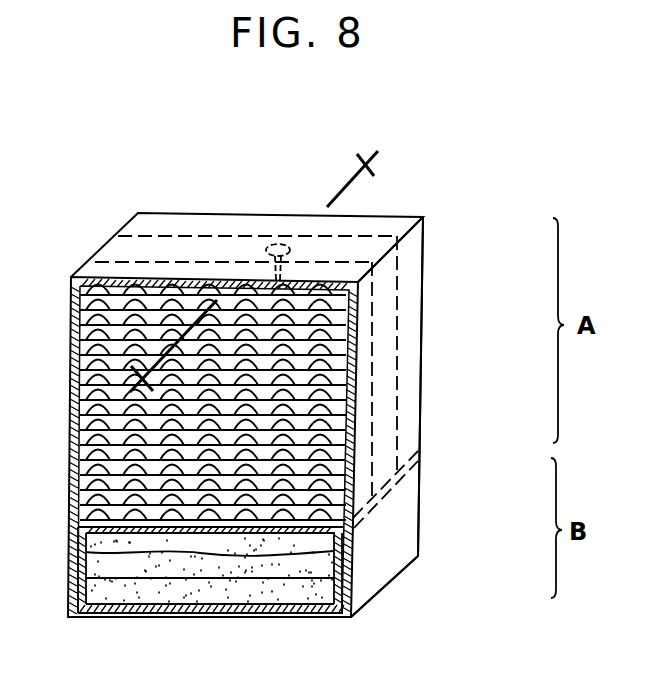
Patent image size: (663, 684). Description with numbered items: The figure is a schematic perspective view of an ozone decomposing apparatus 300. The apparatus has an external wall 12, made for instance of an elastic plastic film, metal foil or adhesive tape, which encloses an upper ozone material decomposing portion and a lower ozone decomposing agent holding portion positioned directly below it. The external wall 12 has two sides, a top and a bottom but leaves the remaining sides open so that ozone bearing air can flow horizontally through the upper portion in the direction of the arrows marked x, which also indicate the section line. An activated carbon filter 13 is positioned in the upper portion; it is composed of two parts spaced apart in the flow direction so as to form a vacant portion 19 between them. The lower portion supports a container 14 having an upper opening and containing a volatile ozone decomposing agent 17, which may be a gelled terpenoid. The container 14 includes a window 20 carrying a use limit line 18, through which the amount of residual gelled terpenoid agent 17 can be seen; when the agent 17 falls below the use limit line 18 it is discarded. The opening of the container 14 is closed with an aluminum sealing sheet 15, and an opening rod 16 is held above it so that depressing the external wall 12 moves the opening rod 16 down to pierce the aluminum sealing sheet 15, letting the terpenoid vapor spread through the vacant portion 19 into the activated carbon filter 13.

The ozone decomposing apparatus 300 is at (447, 215).
The external wall 12 is at (410, 281).
The activated carbon filter 13 is at (355, 347).
The container 14 is at (408, 527).
The aluminum sealing sheet 15 is at (90, 516).
The opening rod 16 is at (268, 258).
The volatile ozone decomposing agent 17 is at (333, 570).
The use limit line 18 is at (100, 577).
The vacant portion 19 is at (382, 423).
The window 20 is at (330, 605).